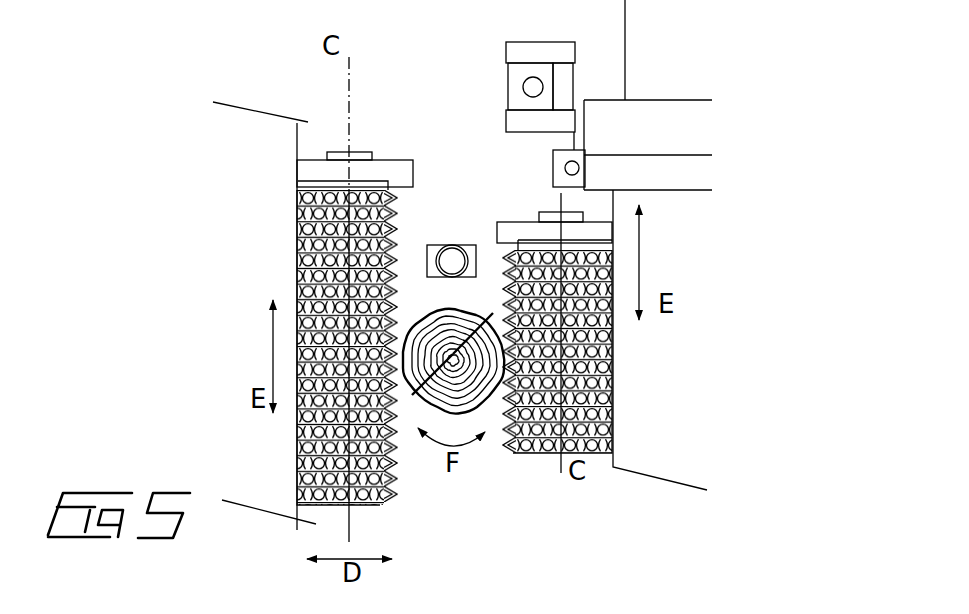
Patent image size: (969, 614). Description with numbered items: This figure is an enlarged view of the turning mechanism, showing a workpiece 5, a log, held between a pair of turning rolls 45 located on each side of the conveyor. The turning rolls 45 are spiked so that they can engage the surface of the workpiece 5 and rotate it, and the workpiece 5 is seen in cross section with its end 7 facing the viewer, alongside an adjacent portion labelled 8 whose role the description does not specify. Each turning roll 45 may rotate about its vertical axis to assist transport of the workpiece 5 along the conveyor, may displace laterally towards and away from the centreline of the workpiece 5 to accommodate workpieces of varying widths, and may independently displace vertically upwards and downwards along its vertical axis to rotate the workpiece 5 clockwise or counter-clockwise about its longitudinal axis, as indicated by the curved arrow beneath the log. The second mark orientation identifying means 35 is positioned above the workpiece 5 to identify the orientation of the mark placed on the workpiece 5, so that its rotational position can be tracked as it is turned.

The workpiece 5 is at (428, 302).
The end 7 is at (487, 407).
The log section 8 is at (415, 405).
The second mark orientation identifying means 35 is at (455, 260).
The turning rolls 45 is at (305, 233).